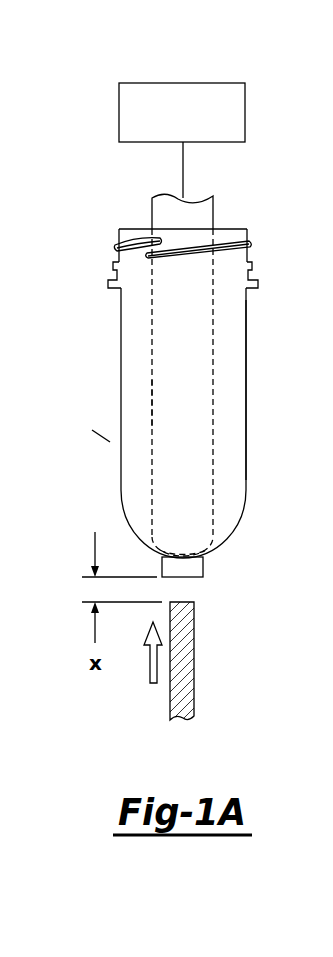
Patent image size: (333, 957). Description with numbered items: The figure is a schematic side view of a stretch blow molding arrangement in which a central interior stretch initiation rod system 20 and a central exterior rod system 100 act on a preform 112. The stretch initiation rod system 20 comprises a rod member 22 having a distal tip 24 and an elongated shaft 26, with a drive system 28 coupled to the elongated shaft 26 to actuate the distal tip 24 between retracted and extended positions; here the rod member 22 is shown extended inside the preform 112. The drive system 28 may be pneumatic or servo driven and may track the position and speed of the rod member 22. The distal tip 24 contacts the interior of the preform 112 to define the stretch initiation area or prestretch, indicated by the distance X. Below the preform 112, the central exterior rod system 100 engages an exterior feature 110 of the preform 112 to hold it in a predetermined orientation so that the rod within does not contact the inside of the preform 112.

The central interior stretch initiation rod system 20 is at (245, 195).
The rod member 22 is at (152, 213).
The distal tip 24 is at (208, 545).
The elongated shaft 26 is at (150, 415).
The drive system 28 is at (119, 112).
The central exterior rod system 100 is at (194, 688).
The exterior feature 110 is at (203, 567).
The preform 112 is at (246, 386).